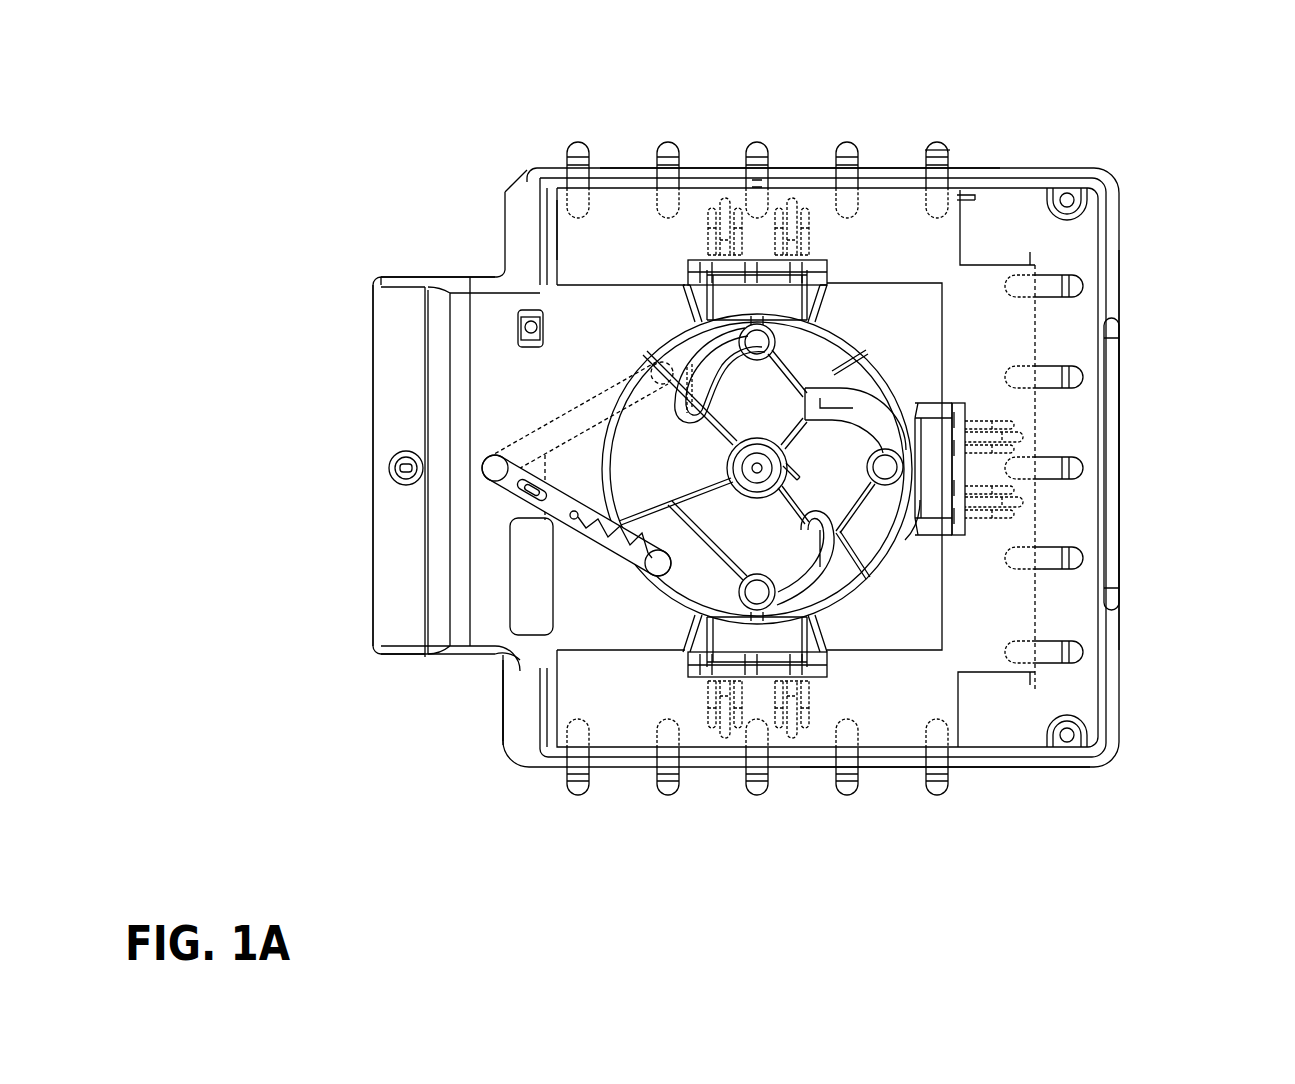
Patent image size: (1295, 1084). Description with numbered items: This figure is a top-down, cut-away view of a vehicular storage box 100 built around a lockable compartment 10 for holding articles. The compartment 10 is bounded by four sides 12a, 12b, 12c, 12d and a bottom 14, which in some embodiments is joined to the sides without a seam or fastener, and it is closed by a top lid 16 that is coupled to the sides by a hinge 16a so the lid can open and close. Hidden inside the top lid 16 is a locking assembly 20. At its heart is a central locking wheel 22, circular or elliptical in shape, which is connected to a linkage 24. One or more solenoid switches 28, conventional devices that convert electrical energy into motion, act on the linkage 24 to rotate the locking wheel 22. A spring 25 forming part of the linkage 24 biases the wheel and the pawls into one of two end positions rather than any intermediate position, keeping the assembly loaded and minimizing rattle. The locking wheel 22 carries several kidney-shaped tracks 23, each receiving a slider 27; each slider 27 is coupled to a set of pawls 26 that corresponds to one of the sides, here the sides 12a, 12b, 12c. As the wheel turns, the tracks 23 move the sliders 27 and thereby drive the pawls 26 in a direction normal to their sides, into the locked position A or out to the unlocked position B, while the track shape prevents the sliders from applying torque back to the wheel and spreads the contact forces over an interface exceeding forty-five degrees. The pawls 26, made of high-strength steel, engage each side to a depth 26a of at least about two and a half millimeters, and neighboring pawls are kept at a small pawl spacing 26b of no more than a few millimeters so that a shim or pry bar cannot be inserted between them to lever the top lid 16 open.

The vehicular storage box 100 is at (268, 180).
The compartment 10 is at (520, 243).
The side 12a is at (1010, 166).
The side 12b is at (1121, 262).
The side 12c is at (997, 775).
The side 12d is at (503, 716).
The bottom 14 is at (577, 236).
The top lid 16 is at (912, 207).
The hinge 16a is at (447, 590).
The locking assembly 20 is at (905, 356).
The central locking wheel 22 is at (878, 535).
The kidney-shaped tracks 23 is at (870, 428).
The linkage 24 is at (513, 462).
The spring 25 is at (605, 552).
The pawls 26 is at (655, 790).
The depth 26a is at (497, 205).
The pawl spacing 26b is at (757, 128).
The sliders 27 is at (822, 632).
The solenoid switches 28 is at (510, 533).
The locked position A is at (955, 150).
The unlocked position B is at (957, 208).